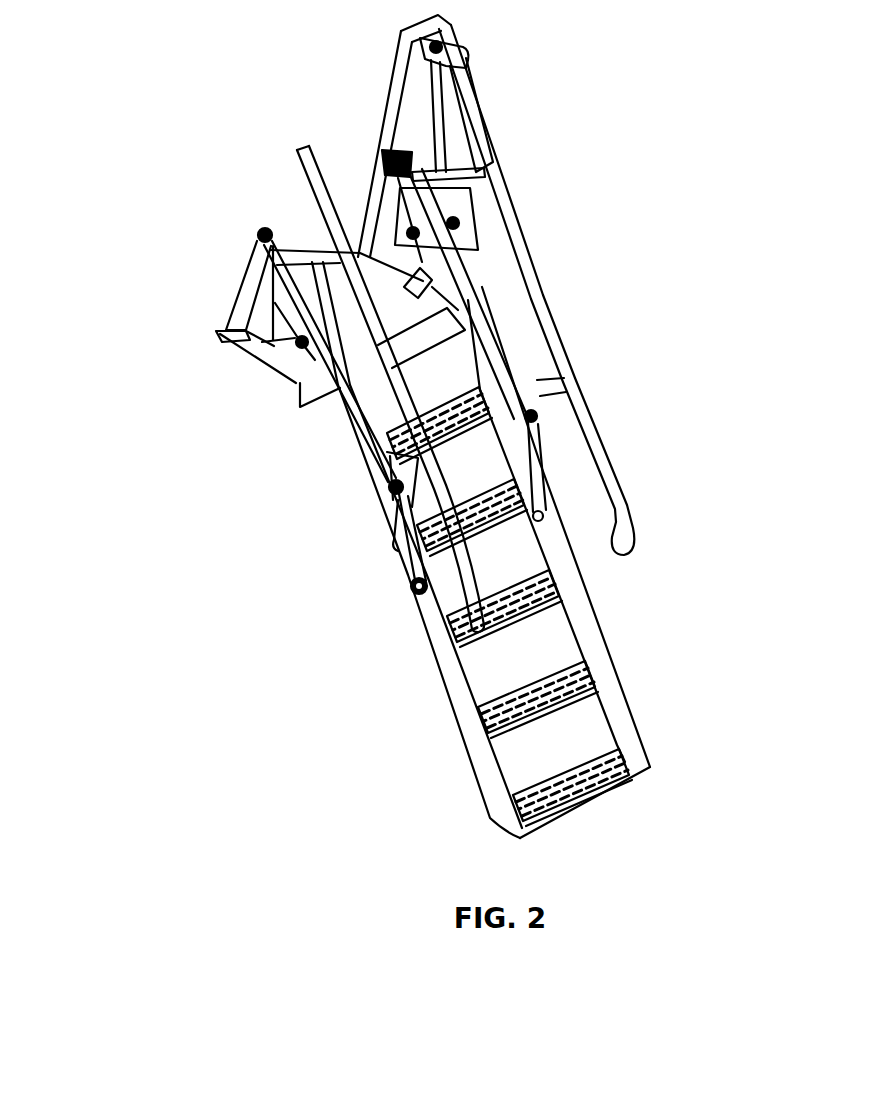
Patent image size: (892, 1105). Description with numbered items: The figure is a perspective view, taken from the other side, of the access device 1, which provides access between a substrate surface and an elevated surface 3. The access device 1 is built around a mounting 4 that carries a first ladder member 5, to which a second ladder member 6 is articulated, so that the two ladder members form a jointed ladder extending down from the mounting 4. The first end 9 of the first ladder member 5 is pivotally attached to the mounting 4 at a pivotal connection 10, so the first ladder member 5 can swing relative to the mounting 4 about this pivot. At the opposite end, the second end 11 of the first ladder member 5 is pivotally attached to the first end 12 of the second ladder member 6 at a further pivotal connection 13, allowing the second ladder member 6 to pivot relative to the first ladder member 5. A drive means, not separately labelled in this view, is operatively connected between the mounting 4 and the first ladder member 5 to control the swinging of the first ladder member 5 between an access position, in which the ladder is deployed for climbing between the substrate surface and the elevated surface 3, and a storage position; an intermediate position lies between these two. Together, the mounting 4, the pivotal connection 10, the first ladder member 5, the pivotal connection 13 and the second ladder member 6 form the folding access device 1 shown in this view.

The access device 1 is at (591, 161).
The elevated surface 3 is at (292, 386).
The mounting 4 is at (218, 335).
The first ladder member 5 is at (378, 468).
The second ladder member 6 is at (444, 690).
The first end 9 is at (324, 432).
The pivotal connection 10 is at (243, 348).
The second end 11 is at (374, 536).
The first end 12 is at (392, 624).
The pivotal connection 13 is at (410, 582).